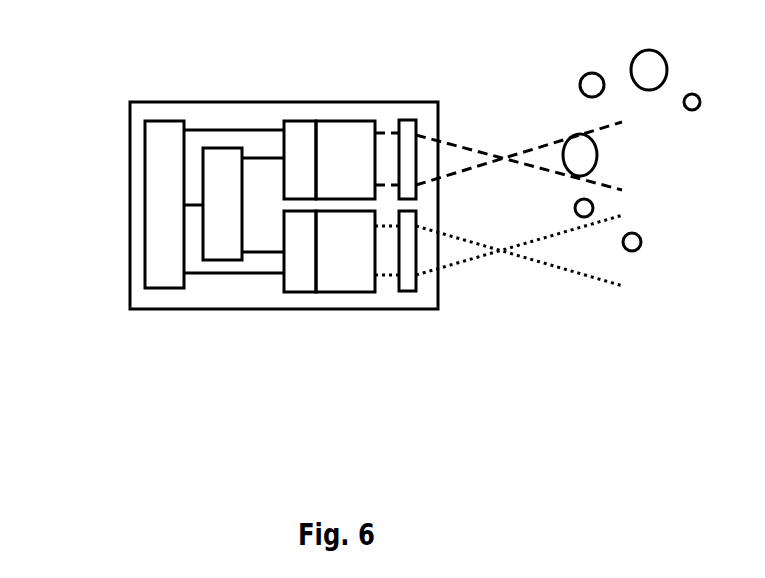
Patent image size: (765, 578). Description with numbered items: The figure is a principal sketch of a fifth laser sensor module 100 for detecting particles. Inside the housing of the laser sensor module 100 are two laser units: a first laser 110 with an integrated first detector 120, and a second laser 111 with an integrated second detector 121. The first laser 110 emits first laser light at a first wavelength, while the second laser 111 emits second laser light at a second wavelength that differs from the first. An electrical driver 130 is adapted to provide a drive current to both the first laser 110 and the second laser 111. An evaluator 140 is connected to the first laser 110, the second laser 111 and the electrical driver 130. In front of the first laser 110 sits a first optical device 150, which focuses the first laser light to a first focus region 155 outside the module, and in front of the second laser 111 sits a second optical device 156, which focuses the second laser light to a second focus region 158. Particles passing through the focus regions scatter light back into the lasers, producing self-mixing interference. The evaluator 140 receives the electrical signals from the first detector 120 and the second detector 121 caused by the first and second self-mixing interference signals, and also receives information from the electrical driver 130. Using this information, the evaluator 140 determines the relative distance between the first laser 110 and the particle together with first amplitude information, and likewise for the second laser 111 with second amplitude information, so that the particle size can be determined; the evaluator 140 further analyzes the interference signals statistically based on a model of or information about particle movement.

The fifth laser sensor module 100 is at (147, 101).
The first laser 110 is at (337, 120).
The second laser 111 is at (350, 292).
The first detector 120 is at (303, 120).
The second detector 121 is at (297, 292).
The electrical driver 130 is at (145, 212).
The evaluator 140 is at (223, 260).
The first optical device 150 is at (412, 120).
The first focus region 155 is at (502, 158).
The second optical device 156 is at (405, 282).
The second focus region 158 is at (500, 252).